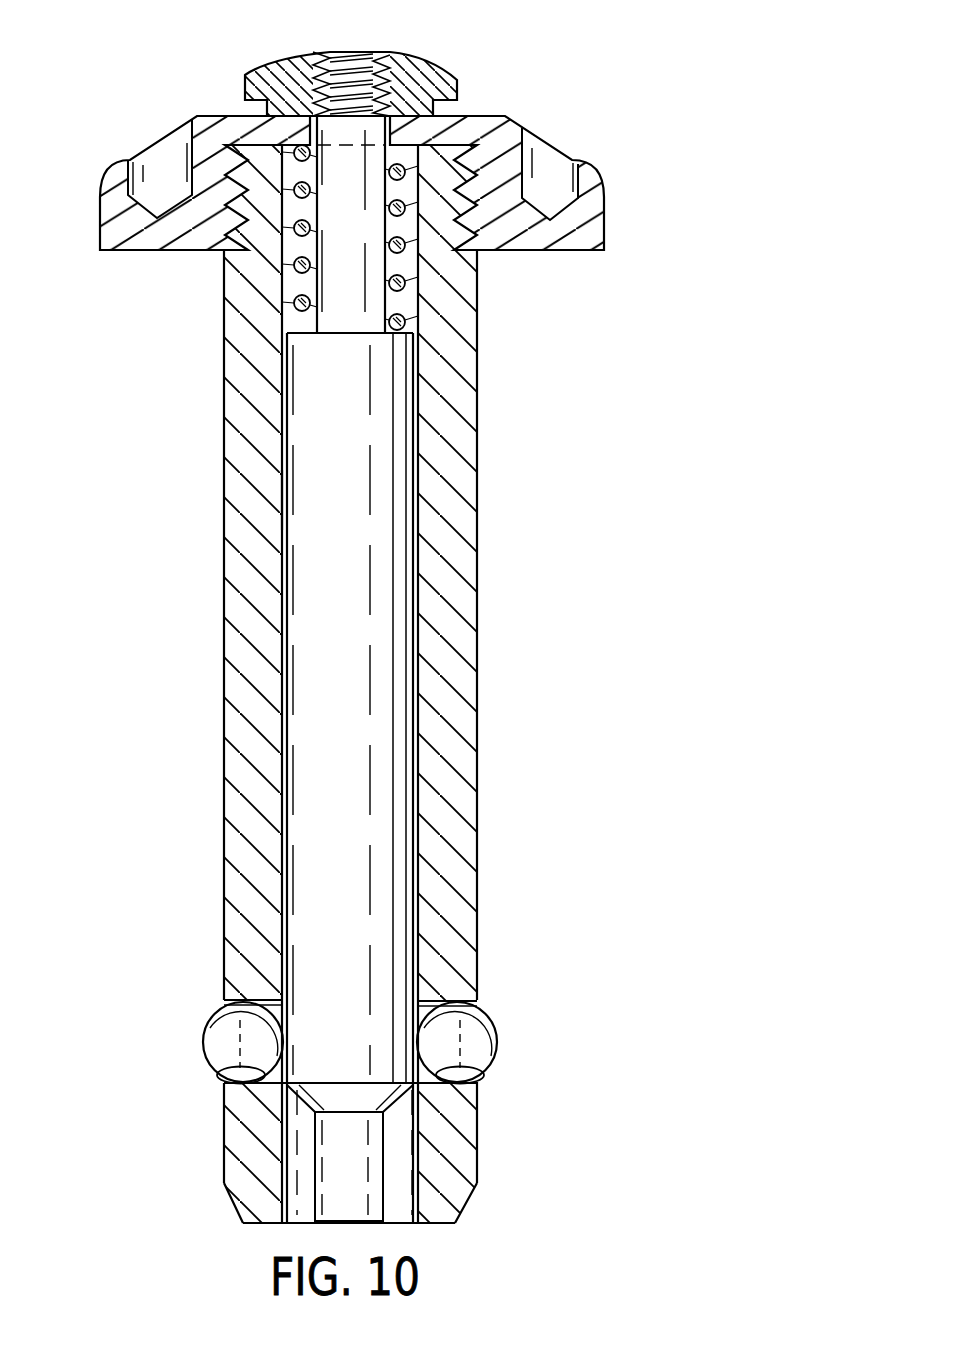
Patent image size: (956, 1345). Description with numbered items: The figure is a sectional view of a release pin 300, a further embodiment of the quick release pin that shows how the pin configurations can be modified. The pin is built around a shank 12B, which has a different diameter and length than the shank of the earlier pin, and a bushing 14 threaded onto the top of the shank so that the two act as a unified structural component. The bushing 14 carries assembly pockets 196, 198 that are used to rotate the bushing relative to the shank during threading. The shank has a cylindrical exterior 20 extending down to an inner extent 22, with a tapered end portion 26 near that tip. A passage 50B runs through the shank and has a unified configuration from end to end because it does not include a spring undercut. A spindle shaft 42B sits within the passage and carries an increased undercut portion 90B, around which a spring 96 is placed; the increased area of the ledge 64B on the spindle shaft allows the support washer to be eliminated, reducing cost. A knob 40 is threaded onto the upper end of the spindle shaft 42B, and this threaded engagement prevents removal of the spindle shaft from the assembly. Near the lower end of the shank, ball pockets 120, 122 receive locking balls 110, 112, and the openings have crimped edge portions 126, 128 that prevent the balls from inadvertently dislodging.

The release pin 300 is at (570, 86).
The knob 40 is at (428, 56).
The bushing 14 is at (606, 215).
The assembly pocket 196 is at (158, 153).
The assembly pocket 198 is at (552, 163).
The shank 12B is at (479, 648).
The exterior 20 is at (478, 845).
The crimped edge portion 126 is at (232, 1002).
The crimped edge portion 128 is at (473, 1000).
The undercut portion 90B is at (373, 258).
The spring 96 is at (296, 265).
The ledge 64B is at (303, 330).
The spindle shaft 42B is at (411, 757).
The passage 50B is at (282, 478).
The locking ball 110 is at (215, 1041).
The locking ball 112 is at (484, 1034).
The ball pocket 120 is at (242, 1068).
The ball pocket 122 is at (465, 1067).
The inner extent 22 is at (478, 1167).
The tapered end portion 26 is at (470, 1198).